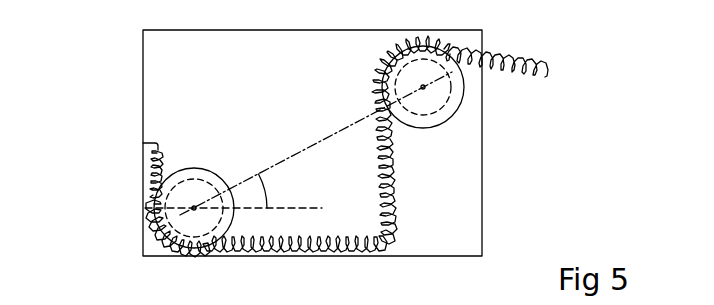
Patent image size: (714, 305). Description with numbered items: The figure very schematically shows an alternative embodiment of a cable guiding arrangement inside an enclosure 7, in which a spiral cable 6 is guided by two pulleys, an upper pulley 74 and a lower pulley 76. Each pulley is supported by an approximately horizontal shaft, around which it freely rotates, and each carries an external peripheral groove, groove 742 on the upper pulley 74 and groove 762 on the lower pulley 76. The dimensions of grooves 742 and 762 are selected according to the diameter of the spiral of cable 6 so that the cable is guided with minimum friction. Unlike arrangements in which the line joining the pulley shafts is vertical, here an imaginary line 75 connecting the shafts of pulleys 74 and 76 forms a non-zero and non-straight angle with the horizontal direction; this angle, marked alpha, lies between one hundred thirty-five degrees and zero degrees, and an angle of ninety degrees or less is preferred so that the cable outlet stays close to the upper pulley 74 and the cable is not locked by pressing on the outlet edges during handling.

The housing 7 is at (143, 76).
The upper pulley 74 is at (452, 58).
The external peripheral groove 742 is at (452, 106).
The imaginary line 75 is at (305, 150).
The lower pulley 76 is at (165, 176).
The external peripheral groove 762 is at (160, 231).
The cable 6 is at (398, 172).